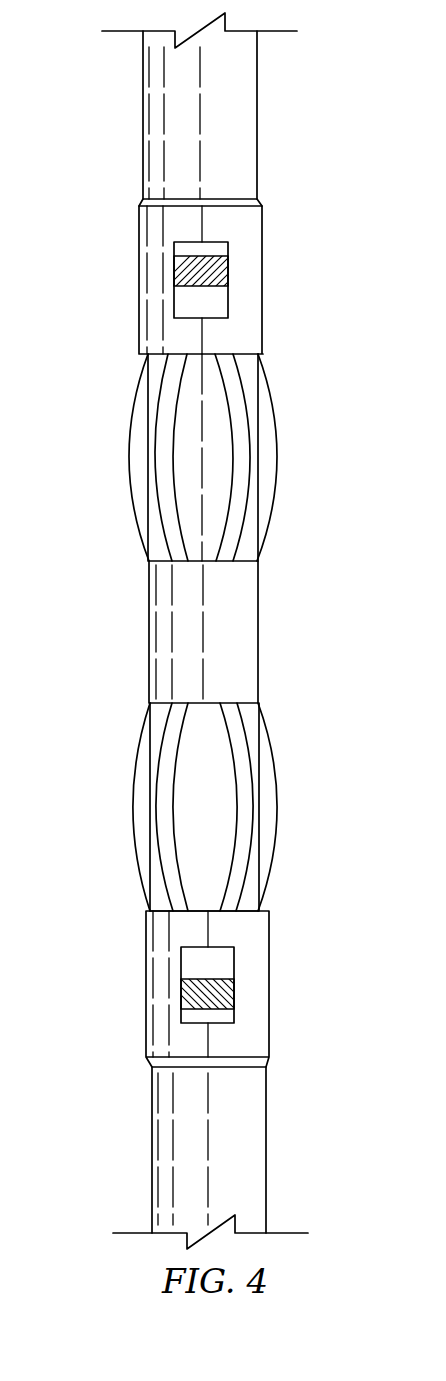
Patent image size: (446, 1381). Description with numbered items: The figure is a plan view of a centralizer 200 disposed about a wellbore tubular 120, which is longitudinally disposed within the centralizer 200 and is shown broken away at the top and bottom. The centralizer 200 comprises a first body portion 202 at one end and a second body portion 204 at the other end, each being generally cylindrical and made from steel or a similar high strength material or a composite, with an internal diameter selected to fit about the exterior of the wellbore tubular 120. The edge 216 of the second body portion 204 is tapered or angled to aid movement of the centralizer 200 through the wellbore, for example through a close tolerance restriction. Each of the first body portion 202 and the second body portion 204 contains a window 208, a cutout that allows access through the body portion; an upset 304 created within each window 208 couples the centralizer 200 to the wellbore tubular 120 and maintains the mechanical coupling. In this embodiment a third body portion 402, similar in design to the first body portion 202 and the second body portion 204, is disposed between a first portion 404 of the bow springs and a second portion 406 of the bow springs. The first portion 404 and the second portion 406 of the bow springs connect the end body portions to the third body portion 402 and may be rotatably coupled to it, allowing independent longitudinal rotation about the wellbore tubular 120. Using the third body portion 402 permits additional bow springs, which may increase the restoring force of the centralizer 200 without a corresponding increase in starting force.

The wellbore tubular 120 is at (143, 97).
The centralizer 200 is at (112, 238).
The first body portion 202 is at (269, 1017).
The second body portion 204 is at (263, 331).
The window 208 is at (228, 308).
The trailing edge 216 is at (215, 198).
The upset 304 is at (228, 266).
The third body portion 402 is at (149, 626).
The first portion of the bow springs 404 is at (138, 749).
The second portion of the bow springs 406 is at (137, 388).